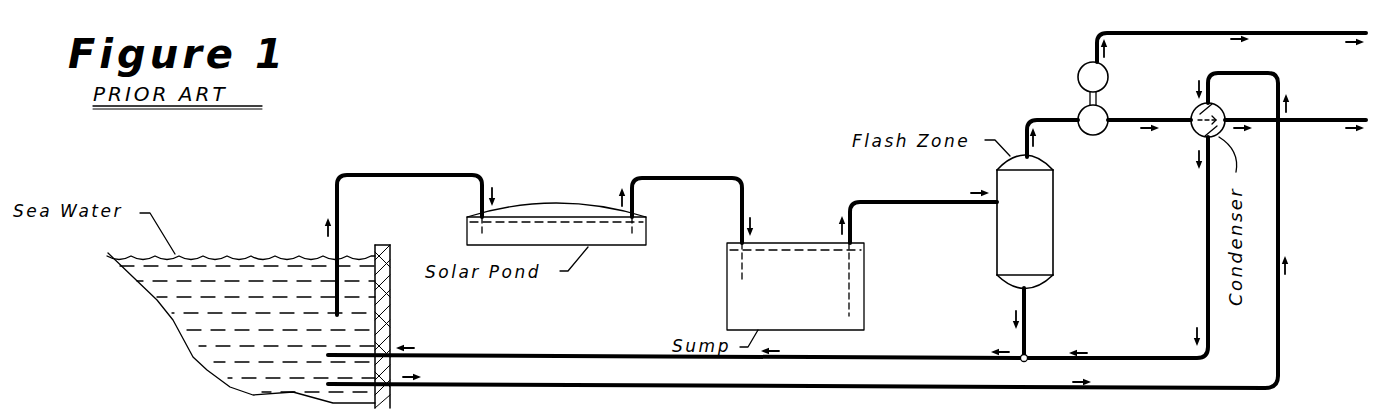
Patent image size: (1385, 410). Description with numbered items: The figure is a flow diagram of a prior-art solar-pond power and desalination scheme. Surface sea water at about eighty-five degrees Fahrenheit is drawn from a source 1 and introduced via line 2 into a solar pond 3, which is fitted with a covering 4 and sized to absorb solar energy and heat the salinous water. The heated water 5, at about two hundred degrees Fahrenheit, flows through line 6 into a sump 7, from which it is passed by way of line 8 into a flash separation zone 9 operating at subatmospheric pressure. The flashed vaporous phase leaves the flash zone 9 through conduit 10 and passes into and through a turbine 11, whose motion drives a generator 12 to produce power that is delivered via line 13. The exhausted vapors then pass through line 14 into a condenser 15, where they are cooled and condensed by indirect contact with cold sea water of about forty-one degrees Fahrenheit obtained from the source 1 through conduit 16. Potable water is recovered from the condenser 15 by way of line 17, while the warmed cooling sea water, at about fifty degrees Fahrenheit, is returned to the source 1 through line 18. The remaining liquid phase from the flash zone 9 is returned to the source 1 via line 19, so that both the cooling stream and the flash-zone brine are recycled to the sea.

The source 1 is at (193, 323).
The line 2 is at (427, 175).
The solar pond 3 is at (620, 250).
The covering 4 is at (555, 203).
The heated water 5 is at (478, 236).
The line 6 is at (672, 173).
The sump 7 is at (865, 310).
The line 8 is at (899, 204).
The flash separation zone 9 is at (1055, 233).
The conduit 10 is at (1052, 117).
The turbine 11 is at (1097, 136).
The generator 12 is at (1108, 69).
The line 13 is at (1198, 35).
The line 14 is at (1137, 116).
The condenser 15 is at (1193, 136).
The conduit 16 is at (447, 383).
The line 17 is at (1304, 118).
The line 18 is at (445, 354).
The line 19 is at (1027, 330).